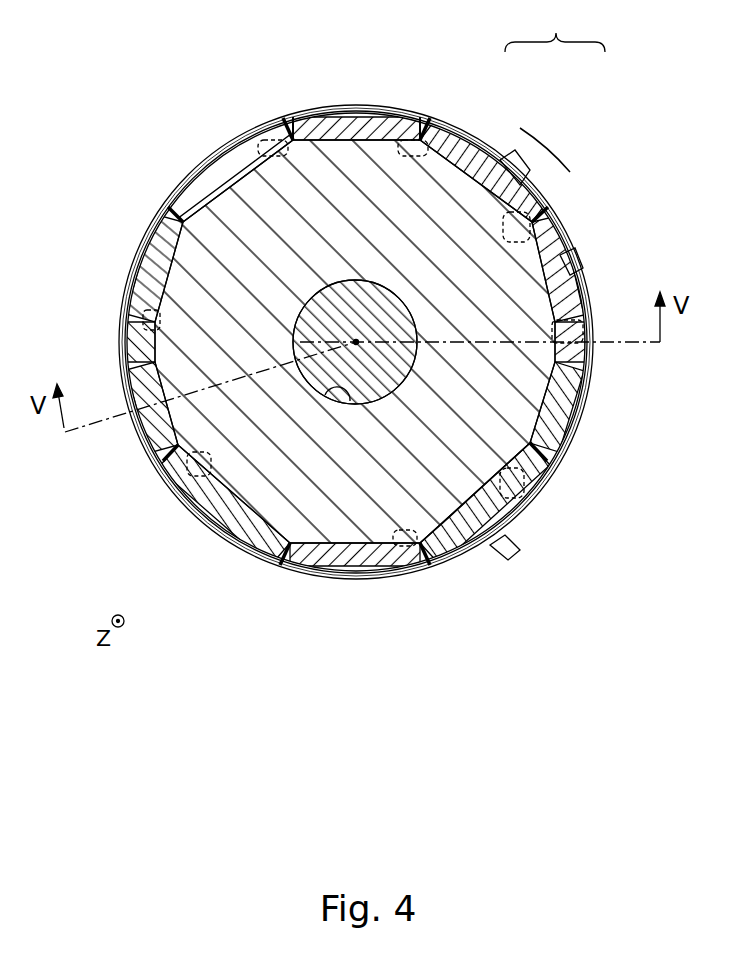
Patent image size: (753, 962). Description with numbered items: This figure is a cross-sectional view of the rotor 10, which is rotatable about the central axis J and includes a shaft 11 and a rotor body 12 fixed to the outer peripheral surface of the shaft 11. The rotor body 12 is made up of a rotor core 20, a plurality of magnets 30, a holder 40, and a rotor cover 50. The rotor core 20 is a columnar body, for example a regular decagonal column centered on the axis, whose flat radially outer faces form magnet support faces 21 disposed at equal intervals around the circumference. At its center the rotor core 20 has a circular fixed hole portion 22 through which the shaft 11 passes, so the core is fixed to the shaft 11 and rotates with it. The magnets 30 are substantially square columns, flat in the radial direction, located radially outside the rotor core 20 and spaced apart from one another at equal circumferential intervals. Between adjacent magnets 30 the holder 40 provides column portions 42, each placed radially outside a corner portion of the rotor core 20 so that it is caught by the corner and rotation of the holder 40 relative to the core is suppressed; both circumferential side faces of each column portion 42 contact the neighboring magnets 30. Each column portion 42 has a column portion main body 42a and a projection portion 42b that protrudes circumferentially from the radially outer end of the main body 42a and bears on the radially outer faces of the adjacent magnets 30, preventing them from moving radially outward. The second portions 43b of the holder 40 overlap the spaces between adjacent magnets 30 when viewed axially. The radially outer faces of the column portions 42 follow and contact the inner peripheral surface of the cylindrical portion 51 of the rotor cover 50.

The rotor 10 is at (555, 27).
The shaft 11 is at (360, 336).
The rotor body 12 is at (548, 142).
The rotor core 20 is at (522, 400).
The magnet support face 21 is at (508, 162).
The fixed hole portion 22 is at (350, 385).
The magnet 30 is at (228, 160).
The holder 40 is at (184, 518).
The column portion 42 is at (287, 114).
The column portion main body 42a is at (432, 562).
The projection portion 42b is at (478, 552).
The second portion 43b is at (330, 108).
The rotor cover 50 is at (180, 164).
The cylindrical portion 51 is at (242, 150).